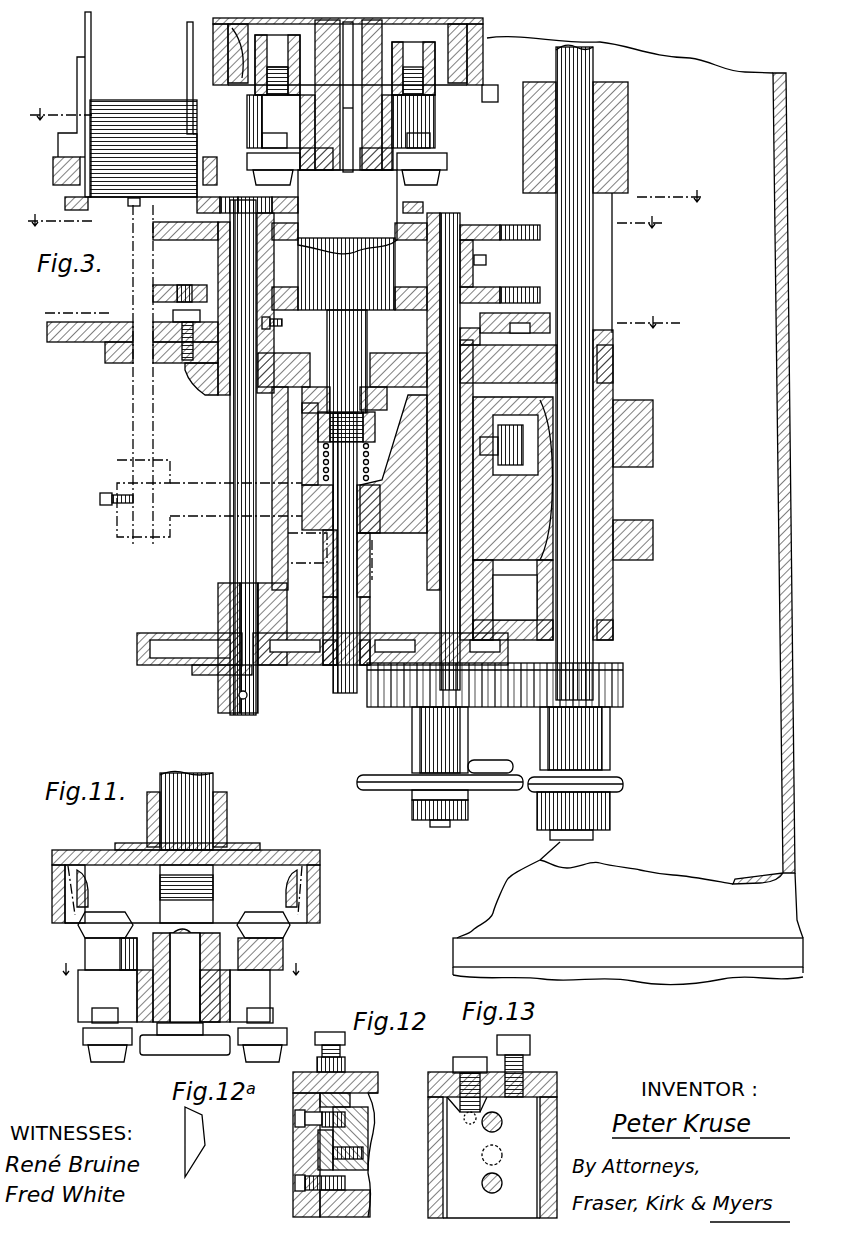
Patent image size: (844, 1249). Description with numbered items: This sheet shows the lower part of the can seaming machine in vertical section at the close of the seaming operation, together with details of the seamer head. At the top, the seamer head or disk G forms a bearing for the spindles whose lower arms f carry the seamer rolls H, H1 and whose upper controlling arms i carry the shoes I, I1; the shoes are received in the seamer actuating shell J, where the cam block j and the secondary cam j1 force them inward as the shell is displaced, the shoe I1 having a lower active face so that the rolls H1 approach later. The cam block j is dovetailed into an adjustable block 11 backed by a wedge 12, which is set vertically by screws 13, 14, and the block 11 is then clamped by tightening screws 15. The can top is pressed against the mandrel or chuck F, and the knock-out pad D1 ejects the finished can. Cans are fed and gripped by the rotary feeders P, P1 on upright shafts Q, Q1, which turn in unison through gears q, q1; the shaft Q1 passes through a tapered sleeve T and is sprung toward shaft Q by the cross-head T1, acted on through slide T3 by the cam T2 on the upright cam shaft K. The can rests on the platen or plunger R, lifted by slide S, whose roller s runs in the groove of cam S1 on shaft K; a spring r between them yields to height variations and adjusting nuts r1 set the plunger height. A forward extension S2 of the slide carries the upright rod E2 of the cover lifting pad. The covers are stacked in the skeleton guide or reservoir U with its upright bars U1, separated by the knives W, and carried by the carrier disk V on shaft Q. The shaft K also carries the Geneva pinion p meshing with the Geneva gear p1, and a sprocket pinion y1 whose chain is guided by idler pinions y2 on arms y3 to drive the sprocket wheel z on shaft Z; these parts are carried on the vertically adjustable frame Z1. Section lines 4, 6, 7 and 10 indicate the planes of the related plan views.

In FIG. 3, the upright bars or frames U1 is at (85, 58).
In FIG. 3, the skeleton guide or reservoir U is at (143, 132).
In FIG. 3, the carrier disk V is at (65, 203).
In FIG. 3, the separating knives W is at (133, 210).
In FIG. 3, the section line 4— 4 is at (366, 154).
In FIG. 3, the section line 6— 6 is at (344, 222).
In FIG. 3, the section line 7— 7 is at (364, 317).
In FIG. 11, the section line 10— 10 is at (182, 968).
In FIG. 3, the seamer actuating shell J is at (482, 60).
In FIG. 11, the seamer actuating shell J is at (280, 858).
In FIG. 12, the seamer actuating shell J is at (378, 1080).
In FIG. 3, the cam j1 is at (347, 53).
In FIG. 11, the cam j1 is at (88, 890).
In FIG. 12, the cam j1 is at (370, 1140).
In FIG. 3, the cam block j is at (448, 75).
In FIG. 11, the cam block j is at (213, 885).
In FIG. 12A, the cam block j is at (204, 1150).
In FIG. 3, the shoe I is at (300, 48).
In FIG. 11, the shoe I1 is at (125, 915).
In FIG. 3, the seamer head or disk G is at (247, 110).
In FIG. 11, the seamer head or disk G is at (78, 997).
In FIG. 3, the mandrel or chuck F is at (308, 132).
In FIG. 11, the mandrel or chuck F is at (155, 1055).
In FIG. 3, the seamer roll H is at (445, 165).
In FIG. 11, the seamer roll H1 is at (87, 1040).
In FIG. 3, the knock-out pad D1 is at (345, 175).
In FIG. 3, the rotary feeder P is at (191, 308).
In FIG. 3, the rotary feeder P1 is at (500, 264).
In FIG. 3, the upright shaft Q is at (230, 468).
In FIG. 3, the upright shaft Q1 is at (417, 567).
In FIG. 3, the upright rod E2 is at (128, 408).
In FIG. 3, the forward extension S2 is at (117, 527).
In FIG. 3, the platen or plunger R is at (310, 310).
In FIG. 3, the cross-head T1 is at (427, 340).
In FIG. 3, the cam T2 is at (608, 342).
In FIG. 3, the slide T3 is at (507, 325).
In FIG. 3, the sleeve T is at (480, 580).
In FIG. 3, the slide S is at (406, 512).
In FIG. 3, the cam S1 is at (640, 517).
In FIG. 3, the roller s is at (516, 480).
In FIG. 3, the spring or yielding buffer r is at (370, 457).
In FIG. 3, the adjusting nuts r1 is at (373, 423).
In FIG. 3, the upright cam shaft K is at (558, 218).
In FIG. 3, the shaft Z is at (445, 822).
In FIG. 3, the vertically adjustable frame Z1 is at (613, 597).
In FIG. 3, the gear q is at (320, 660).
In FIG. 3, the gear q1 is at (360, 660).
In FIG. 3, the Geneva pinion p is at (612, 698).
In FIG. 3, the Geneva gear p1 is at (400, 695).
In FIG. 3, the sprocket pinion y1 is at (615, 790).
In FIG. 3, the idler pinions y2 is at (497, 792).
In FIG. 3, the arms y3 is at (505, 760).
In FIG. 3, the sprocket wheel z is at (400, 787).
In FIG. 11, the controlling arm i is at (85, 948).
In FIG. 11, the arm f is at (92, 1022).
In FIG. 11, the adjustable block 11 is at (315, 900).
In FIG. 12, the adjustable block 11 is at (360, 1200).
In FIG. 12, the wedge 12 is at (318, 1145).
In FIG. 13, the wedge 12 is at (506, 1125).
In FIG. 12, the screw 13 is at (330, 1039).
In FIG. 13, the screw 13 is at (526, 1062).
In FIG. 13, the screw 14 is at (466, 1078).
In FIG. 12, the screws 15 is at (296, 1120).
In FIG. 13, the screws 15 is at (483, 1130).